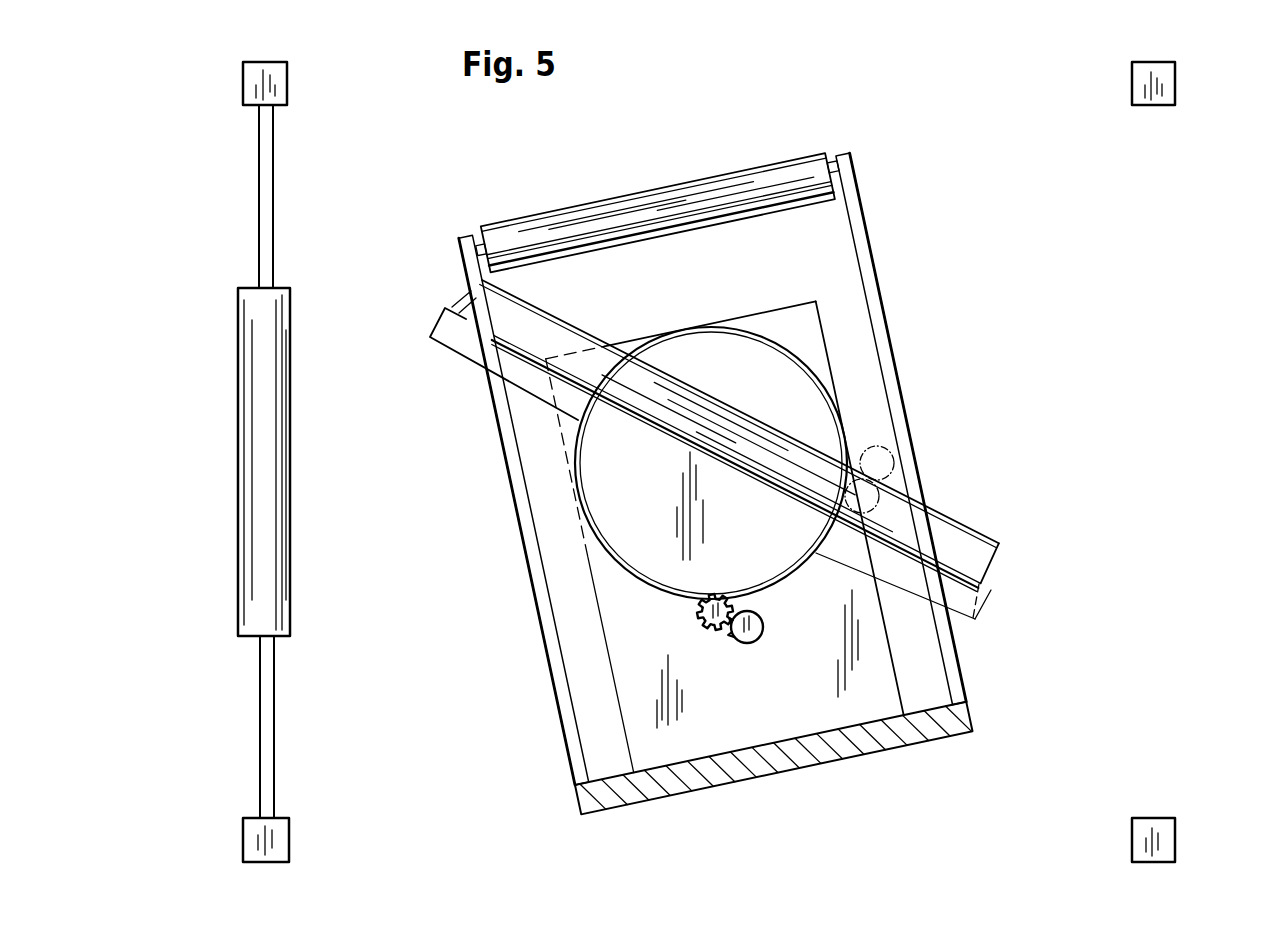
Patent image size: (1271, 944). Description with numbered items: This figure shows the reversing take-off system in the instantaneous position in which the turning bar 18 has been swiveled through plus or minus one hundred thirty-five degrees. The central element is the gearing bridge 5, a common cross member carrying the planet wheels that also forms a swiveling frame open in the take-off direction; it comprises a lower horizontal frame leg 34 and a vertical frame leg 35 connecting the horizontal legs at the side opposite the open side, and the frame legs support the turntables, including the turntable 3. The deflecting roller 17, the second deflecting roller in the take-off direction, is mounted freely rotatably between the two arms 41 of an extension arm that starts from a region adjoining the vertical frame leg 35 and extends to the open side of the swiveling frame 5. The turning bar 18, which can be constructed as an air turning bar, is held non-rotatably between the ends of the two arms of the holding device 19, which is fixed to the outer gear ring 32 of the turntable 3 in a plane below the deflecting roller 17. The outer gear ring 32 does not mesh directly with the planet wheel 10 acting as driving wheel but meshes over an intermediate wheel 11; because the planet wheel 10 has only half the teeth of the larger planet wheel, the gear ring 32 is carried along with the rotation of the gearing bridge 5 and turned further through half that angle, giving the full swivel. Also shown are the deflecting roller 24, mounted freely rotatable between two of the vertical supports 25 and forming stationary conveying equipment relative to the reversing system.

The turntable 3 is at (747, 328).
The gearing bridge 5 is at (782, 796).
The planet wheel 10 is at (751, 632).
The intermediate wheel 11 is at (707, 614).
The deflecting roller 17 is at (667, 203).
The turning bar 18 is at (565, 342).
The holding device 19 is at (462, 344).
The deflecting roller 24 is at (279, 486).
The vertical supports 25 is at (277, 88).
The outer gear ring 32 is at (806, 560).
The lower horizontal frame leg 34 is at (713, 742).
The vertical frame leg 35 is at (910, 733).
The arms 41 is at (880, 327).